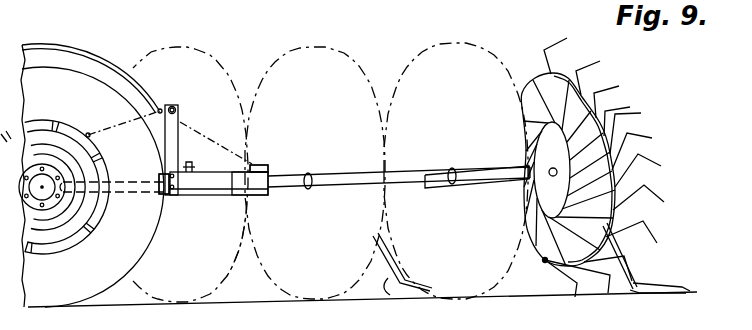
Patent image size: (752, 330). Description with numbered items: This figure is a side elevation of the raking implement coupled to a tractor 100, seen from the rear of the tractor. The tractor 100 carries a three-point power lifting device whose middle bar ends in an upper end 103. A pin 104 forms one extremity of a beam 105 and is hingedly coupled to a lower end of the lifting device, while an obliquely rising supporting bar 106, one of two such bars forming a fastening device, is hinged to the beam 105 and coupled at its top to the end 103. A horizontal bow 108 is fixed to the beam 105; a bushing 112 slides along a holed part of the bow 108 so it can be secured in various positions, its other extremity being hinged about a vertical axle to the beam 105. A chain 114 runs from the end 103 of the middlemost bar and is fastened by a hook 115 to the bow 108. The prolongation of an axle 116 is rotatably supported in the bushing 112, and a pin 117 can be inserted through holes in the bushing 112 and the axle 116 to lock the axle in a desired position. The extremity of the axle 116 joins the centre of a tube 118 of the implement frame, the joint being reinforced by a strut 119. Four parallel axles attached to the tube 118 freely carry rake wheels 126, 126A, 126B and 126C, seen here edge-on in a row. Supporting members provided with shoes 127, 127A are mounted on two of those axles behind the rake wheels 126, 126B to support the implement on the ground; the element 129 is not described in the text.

The tractor 100 is at (359, 165).
The end of the middlemost bar 103 is at (188, 93).
The pin 104 is at (179, 199).
The beam 105 is at (83, 187).
The supporting bar 106 is at (196, 147).
The horizontal bow 108 is at (264, 199).
The bushing 112 is at (219, 203).
The chain 114 is at (169, 136).
The hook 115 is at (286, 154).
The axle 116 is at (380, 192).
The pin 117 is at (210, 164).
The tube 118 is at (477, 189).
The strut 119 is at (399, 189).
The rake wheel 126 is at (190, 188).
The rake wheel 126A is at (315, 188).
The rake wheel 126B is at (456, 186).
The rake wheel 126C is at (561, 179).
The shoe 127 is at (518, 184).
The shoe 127A is at (622, 272).
The rotor periphery 129 is at (241, 250).